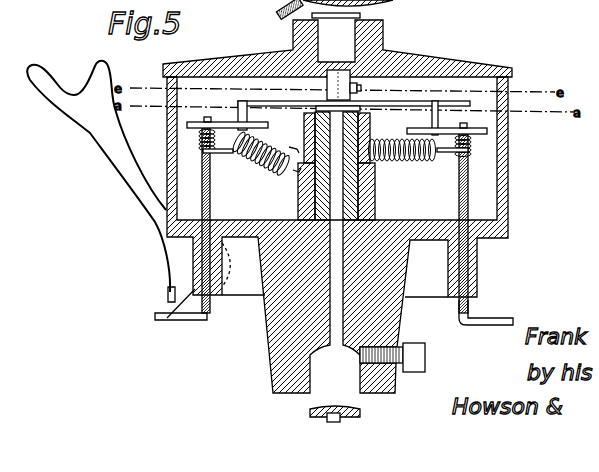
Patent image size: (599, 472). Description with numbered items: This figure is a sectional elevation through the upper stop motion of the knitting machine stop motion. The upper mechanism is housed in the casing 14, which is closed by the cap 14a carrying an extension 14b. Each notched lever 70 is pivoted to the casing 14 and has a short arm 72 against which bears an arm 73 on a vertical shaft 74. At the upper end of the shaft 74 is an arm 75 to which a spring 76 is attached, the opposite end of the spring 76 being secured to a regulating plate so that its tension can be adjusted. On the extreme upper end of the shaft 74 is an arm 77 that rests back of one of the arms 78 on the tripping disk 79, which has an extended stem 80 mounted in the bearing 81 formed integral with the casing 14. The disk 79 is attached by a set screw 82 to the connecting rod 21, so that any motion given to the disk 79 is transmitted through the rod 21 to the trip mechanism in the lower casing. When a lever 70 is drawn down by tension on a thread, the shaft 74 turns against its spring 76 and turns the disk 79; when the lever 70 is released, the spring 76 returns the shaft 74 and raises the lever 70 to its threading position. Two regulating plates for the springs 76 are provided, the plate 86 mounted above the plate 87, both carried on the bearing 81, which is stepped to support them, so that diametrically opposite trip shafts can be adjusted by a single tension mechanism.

The casing 14 is at (167, 148).
The cap 14a is at (416, 63).
The extension 14b is at (360, 15).
The connecting rod 21 is at (333, 348).
The lever 70 is at (293, 20).
The short arm 72 is at (168, 293).
The arm 73 is at (183, 320).
The shaft 74 is at (210, 191).
The arm 75 is at (222, 150).
The spring 76 is at (262, 168).
The arm 77 is at (258, 119).
The arm 78 is at (238, 104).
The tripping disk 79 is at (292, 101).
The stem 80 is at (352, 190).
The bearing 81 is at (372, 205).
The set screw 82 is at (362, 88).
The regulating plate 86 is at (291, 147).
The regulating plate 87 is at (294, 175).